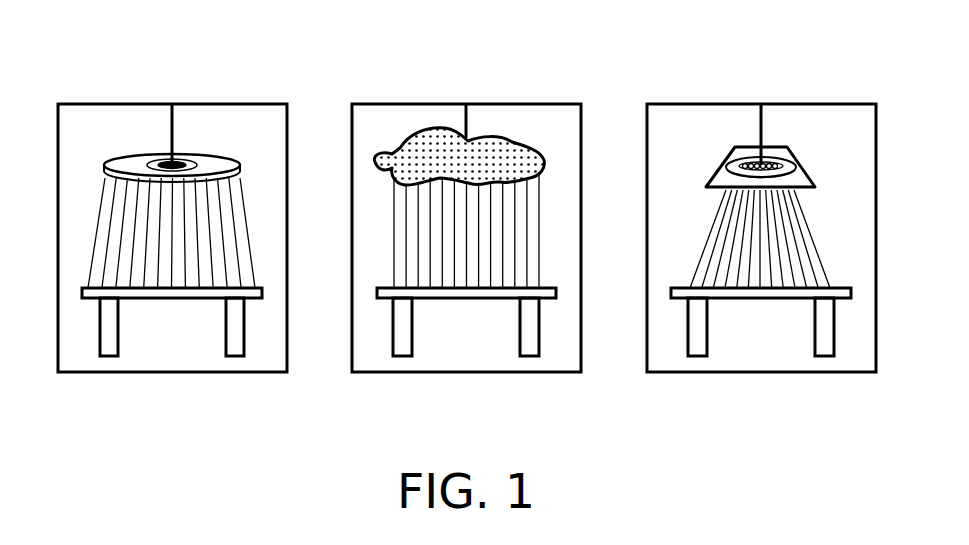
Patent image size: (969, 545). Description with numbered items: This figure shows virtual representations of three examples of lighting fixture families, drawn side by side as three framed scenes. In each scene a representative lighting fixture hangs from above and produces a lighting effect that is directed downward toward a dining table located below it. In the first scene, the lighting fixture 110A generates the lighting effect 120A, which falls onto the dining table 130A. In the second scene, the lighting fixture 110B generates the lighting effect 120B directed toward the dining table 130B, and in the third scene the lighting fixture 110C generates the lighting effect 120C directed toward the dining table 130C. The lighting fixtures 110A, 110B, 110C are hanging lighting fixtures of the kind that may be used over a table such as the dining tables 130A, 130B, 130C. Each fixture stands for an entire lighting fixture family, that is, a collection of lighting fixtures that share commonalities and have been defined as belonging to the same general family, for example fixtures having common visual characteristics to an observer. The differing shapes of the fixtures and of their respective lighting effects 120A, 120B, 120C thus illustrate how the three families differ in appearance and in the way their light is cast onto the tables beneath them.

The lighting fixture 110A is at (120, 163).
The lighting effect 120A is at (225, 203).
The dining table 130A is at (238, 307).
The lighting fixture 110B is at (413, 163).
The lighting effect 120B is at (520, 203).
The dining table 130B is at (533, 307).
The lighting fixture 110C is at (735, 153).
The lighting effect 120C is at (792, 215).
The dining table 130C is at (828, 307).